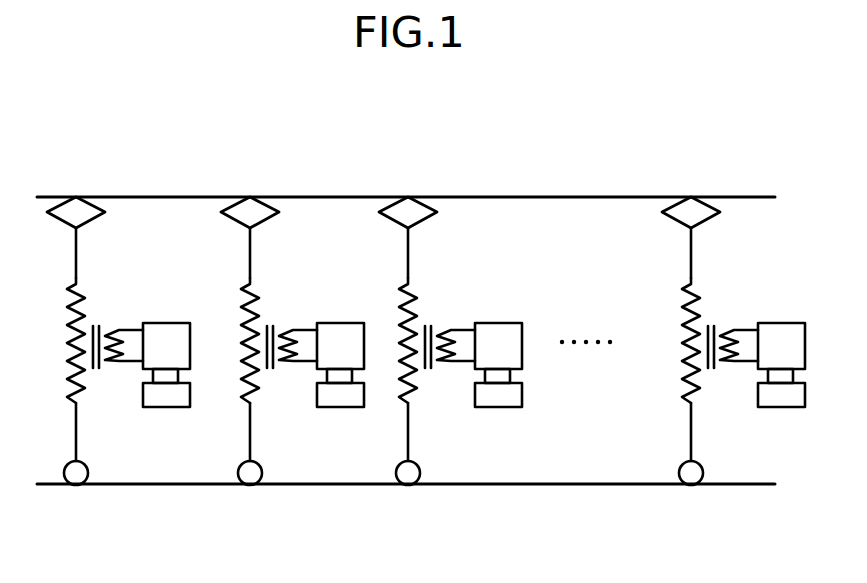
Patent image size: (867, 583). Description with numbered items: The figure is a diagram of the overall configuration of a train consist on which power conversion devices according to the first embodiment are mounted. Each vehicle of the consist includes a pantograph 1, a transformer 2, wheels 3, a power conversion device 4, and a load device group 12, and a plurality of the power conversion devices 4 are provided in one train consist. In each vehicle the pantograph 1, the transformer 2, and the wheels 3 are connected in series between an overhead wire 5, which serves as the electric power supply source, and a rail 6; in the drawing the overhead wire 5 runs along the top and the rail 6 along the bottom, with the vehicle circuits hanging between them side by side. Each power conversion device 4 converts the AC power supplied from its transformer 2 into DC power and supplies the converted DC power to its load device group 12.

The pantograph 1 is at (93, 222).
The transformer 2 is at (97, 324).
The wheels 3 is at (88, 472).
The power conversion device 4 is at (165, 323).
The overhead wire 5 is at (615, 197).
The rail 6 is at (615, 484).
The load device group 12 is at (176, 407).